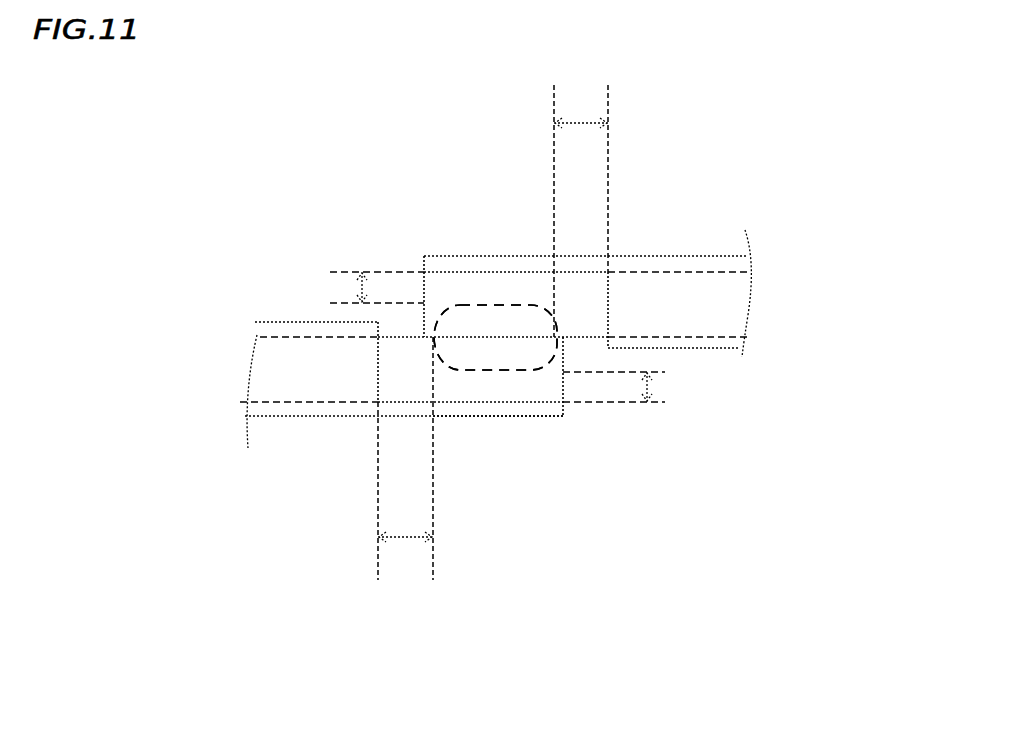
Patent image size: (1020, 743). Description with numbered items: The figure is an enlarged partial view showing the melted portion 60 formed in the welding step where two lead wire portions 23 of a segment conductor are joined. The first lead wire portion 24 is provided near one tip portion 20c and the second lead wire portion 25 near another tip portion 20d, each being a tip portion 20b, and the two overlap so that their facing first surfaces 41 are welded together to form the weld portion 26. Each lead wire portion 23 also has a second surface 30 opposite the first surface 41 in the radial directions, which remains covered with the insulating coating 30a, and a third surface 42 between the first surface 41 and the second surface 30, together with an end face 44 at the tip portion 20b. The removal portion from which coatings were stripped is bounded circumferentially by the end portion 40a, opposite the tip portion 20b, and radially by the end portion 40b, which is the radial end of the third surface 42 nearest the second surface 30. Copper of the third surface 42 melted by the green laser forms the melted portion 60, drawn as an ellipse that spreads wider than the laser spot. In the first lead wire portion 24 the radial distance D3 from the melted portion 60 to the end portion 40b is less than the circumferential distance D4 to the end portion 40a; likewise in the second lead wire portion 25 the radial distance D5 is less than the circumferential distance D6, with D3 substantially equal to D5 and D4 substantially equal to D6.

The lead wire portion 23 is at (469, 336).
The first lead wire portion 24 is at (730, 310).
The second lead wire portion 25 is at (263, 392).
The tip portion 20b is at (502, 347).
The tip portion 20c is at (416, 320).
The tip portion 20d is at (572, 352).
The weld portion 26 is at (533, 332).
The second surface 30 is at (482, 272).
The insulating coating 30a is at (273, 415).
The end portion 40a is at (370, 365).
The end portion 40b is at (434, 405).
The first surface 41 is at (445, 323).
The third surface 42 is at (457, 297).
The end face 44 is at (423, 297).
The melted portion 60 is at (485, 337).
The distance D3 is at (358, 273).
The distance D4 is at (581, 211).
The distance D5 is at (650, 373).
The distance D6 is at (405, 491).